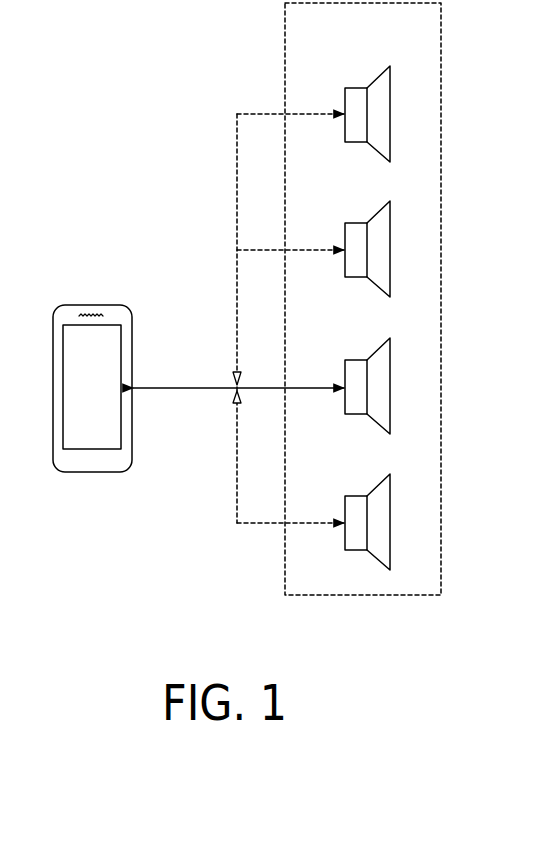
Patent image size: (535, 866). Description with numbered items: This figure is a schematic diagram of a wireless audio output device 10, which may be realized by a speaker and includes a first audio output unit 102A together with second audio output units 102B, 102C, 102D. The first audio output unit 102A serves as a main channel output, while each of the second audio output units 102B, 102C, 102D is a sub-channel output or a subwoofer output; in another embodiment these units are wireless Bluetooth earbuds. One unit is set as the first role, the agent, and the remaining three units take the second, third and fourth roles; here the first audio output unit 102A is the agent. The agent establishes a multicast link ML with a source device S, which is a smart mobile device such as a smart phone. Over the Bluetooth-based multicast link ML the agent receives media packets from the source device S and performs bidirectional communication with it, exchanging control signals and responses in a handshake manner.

The wireless audio output device 10 is at (442, 296).
The first audio output unit 102A is at (359, 360).
The second audio output unit 102B is at (359, 223).
The second audio output unit 102C is at (359, 496).
The second audio output unit 102D is at (359, 88).
The multicast link ML is at (207, 390).
The source device S is at (92, 305).